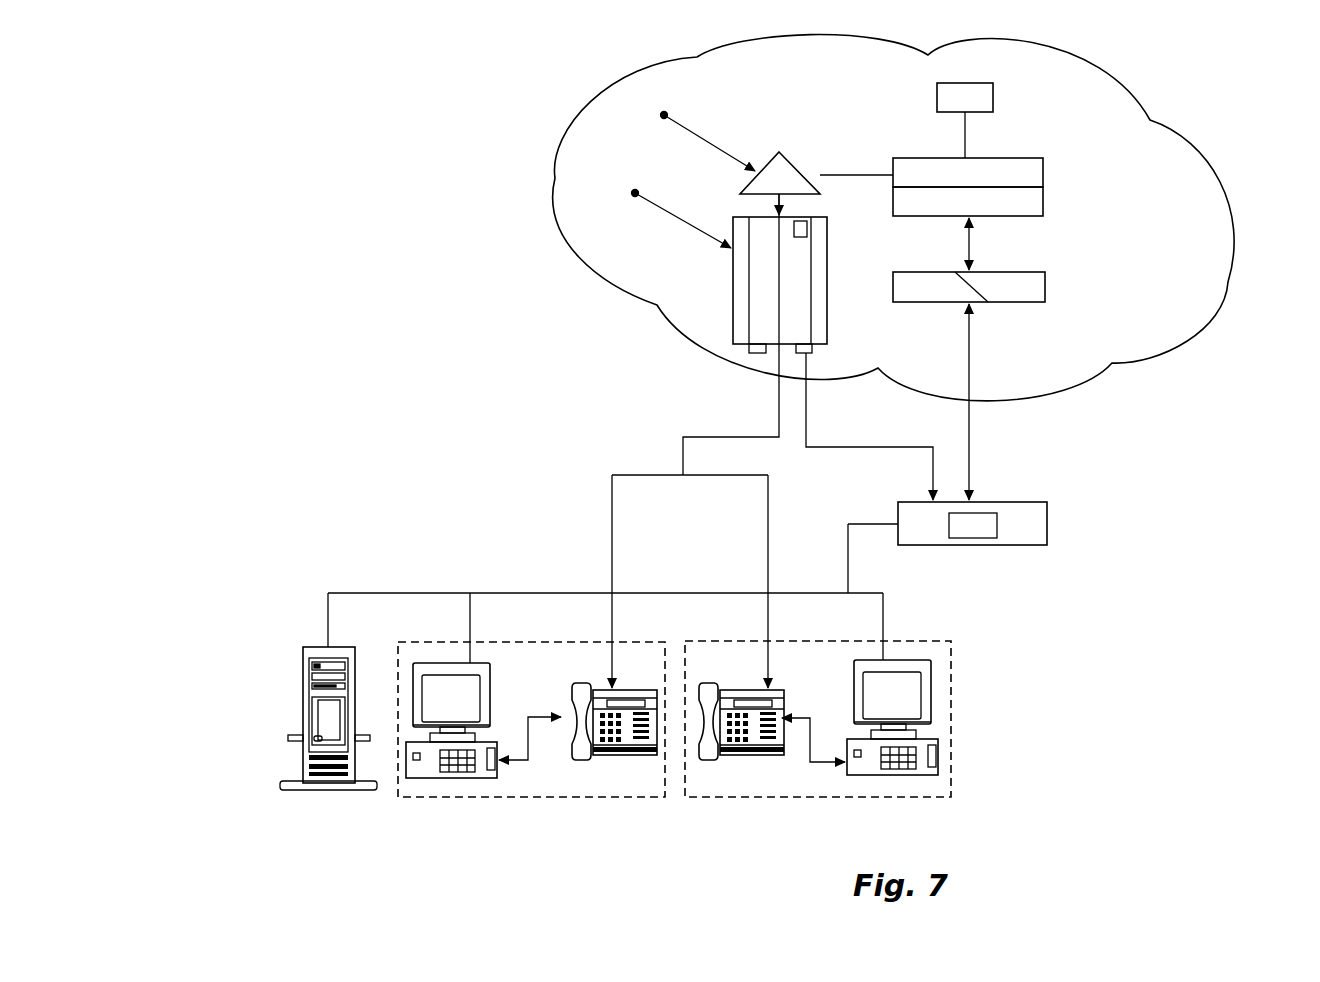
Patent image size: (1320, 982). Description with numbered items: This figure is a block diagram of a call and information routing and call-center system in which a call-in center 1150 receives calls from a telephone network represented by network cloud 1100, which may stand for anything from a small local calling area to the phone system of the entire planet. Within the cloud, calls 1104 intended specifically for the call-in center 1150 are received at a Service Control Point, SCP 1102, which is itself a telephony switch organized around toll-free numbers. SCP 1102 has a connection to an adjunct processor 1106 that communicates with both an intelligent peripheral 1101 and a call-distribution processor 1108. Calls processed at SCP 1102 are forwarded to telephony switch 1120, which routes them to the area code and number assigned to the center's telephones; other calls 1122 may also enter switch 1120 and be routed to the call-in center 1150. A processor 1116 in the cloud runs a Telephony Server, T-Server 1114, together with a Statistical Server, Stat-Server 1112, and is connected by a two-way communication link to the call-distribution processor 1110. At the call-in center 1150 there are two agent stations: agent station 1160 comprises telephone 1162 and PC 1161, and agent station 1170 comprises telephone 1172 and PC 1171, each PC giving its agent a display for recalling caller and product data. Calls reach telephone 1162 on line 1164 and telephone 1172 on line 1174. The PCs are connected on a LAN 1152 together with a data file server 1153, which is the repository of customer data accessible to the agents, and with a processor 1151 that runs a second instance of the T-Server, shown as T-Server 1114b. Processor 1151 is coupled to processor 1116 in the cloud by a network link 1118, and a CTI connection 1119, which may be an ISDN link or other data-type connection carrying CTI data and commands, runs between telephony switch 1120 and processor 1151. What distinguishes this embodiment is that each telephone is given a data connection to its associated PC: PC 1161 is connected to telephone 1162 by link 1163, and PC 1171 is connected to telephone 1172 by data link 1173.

The network cloud 1100 is at (555, 178).
The intelligent peripheral 1101 is at (937, 100).
The Service Control Point (SCP) 1102 is at (779, 150).
The calls 1104 is at (715, 147).
The adjunct processor 1106 is at (1043, 175).
The call-distribution processor 1108 is at (1043, 201).
The call-distribution processor 1110 is at (969, 243).
The Statistical Server (Stat-Server) 1112 is at (1045, 288).
The Telephony Server (T-Server) 1114 is at (917, 282).
The TS module 1114b is at (970, 538).
The processor 1116 is at (891, 287).
The network link 1118 is at (972, 405).
The CTI connection 1119 is at (825, 443).
The telephony switch 1120 is at (733, 297).
The other calls 1122 is at (697, 229).
The call-in center 1150 is at (562, 512).
The processor 1151 is at (1047, 535).
The LAN 1152 is at (478, 593).
The data file server 1153 is at (303, 693).
The agent station 1160 is at (496, 740).
The PC 1161 is at (440, 768).
The telephone 1162 is at (626, 756).
The link 1163 is at (527, 733).
The line 1164 is at (612, 562).
The agent station 1170 is at (866, 739).
The PC 1171 is at (943, 756).
The telephone 1172 is at (773, 756).
The data link 1173 is at (812, 740).
The line 1174 is at (768, 555).